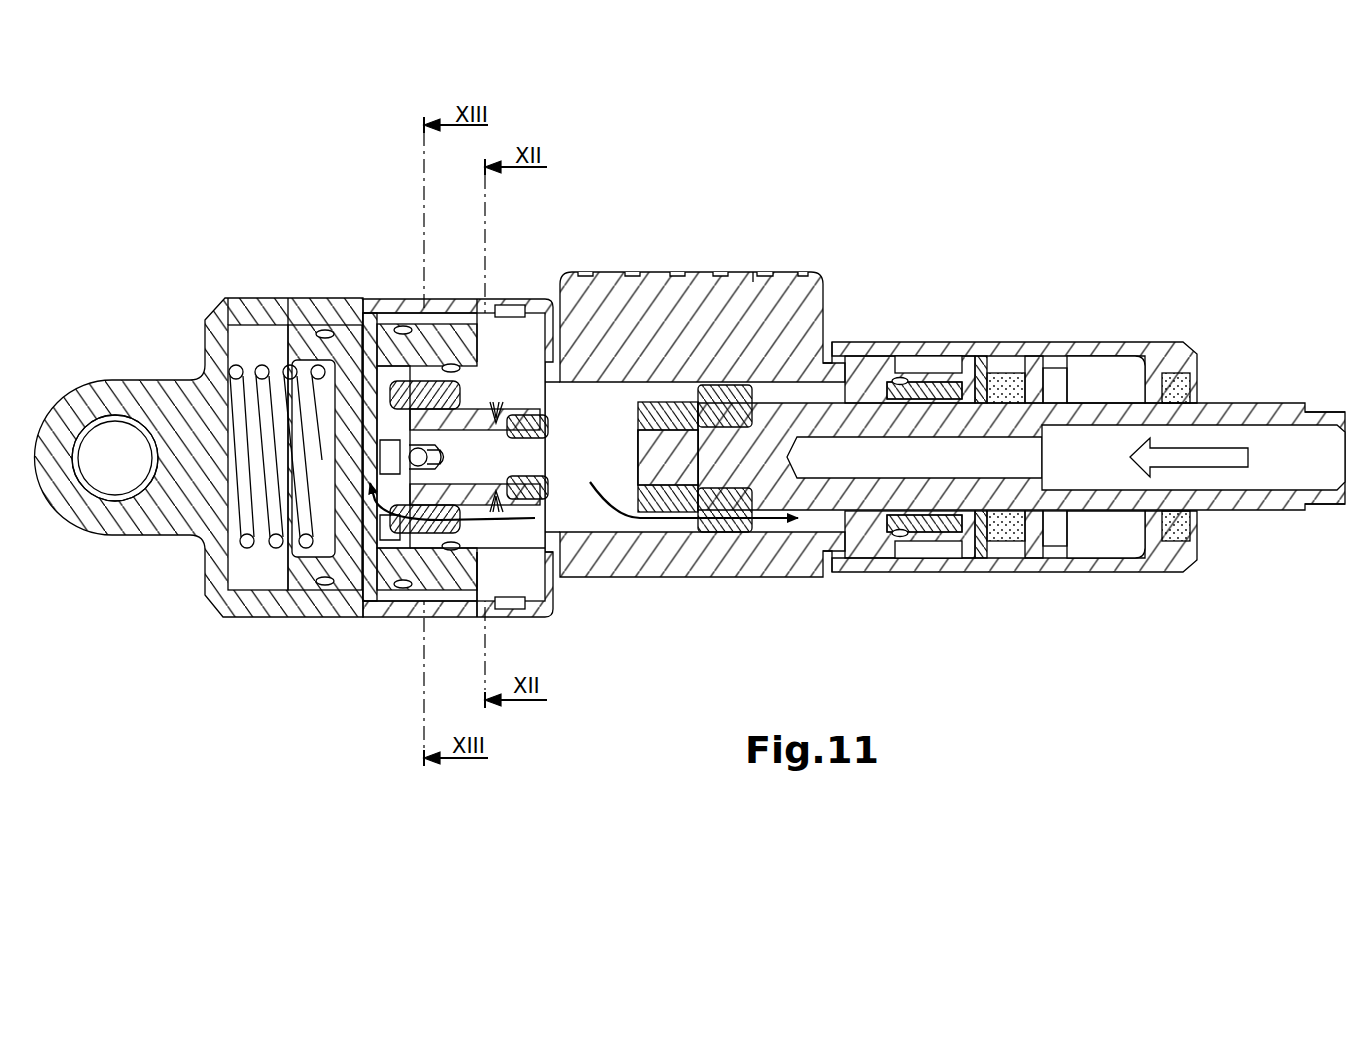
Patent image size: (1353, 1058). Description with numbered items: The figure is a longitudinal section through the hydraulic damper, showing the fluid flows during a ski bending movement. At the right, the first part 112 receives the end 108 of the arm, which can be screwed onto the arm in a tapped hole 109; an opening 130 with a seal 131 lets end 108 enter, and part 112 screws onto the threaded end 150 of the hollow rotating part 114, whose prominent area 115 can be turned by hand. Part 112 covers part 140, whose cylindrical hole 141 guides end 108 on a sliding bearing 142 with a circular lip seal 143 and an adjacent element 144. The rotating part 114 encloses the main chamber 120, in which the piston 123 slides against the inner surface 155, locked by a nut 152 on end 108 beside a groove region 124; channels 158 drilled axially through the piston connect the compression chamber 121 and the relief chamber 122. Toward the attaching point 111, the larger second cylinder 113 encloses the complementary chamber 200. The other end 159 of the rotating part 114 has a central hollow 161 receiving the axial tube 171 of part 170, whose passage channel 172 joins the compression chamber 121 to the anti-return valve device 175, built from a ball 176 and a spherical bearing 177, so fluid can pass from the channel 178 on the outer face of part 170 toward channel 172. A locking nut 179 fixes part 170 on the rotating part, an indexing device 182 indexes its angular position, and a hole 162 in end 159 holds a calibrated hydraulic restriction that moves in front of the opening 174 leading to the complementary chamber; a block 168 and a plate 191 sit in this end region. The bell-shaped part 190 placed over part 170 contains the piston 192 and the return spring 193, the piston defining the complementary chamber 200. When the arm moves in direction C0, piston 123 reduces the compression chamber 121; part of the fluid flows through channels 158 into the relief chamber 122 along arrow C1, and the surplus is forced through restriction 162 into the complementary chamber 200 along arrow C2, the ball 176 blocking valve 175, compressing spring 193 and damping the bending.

The end of arm 108 is at (1260, 412).
The tapped hole 109 is at (1262, 493).
The attaching point 111 is at (112, 450).
The first part 112 is at (1098, 355).
The second cylinder 113 is at (312, 330).
The rotating part 114 is at (607, 340).
The prominent area 115 is at (790, 305).
The main chamber 120 is at (665, 520).
The compression chamber 121 is at (645, 515).
The relief chamber 122 is at (807, 535).
The piston 123 is at (740, 527).
The seal groove 124 is at (730, 395).
The opening 130 is at (1215, 395).
The seal 131 is at (1175, 540).
The part covered by part 112 140 is at (1030, 380).
The cylindrical hole 141 is at (1050, 545).
The sliding bearing 142 is at (878, 550).
The circular lip seal 143 is at (980, 378).
The ring 144 is at (1055, 385).
The end of rotary part 150 is at (885, 363).
The nut 152 is at (668, 405).
The inner surface 155 is at (592, 372).
The channels 158 is at (735, 383).
The end of part 114 159 is at (495, 350).
The central hollow 161 is at (508, 590).
The hole with hydraulic restriction 162 is at (445, 590).
The valve block 168 is at (445, 345).
The part blanking main chamber 170 is at (435, 390).
The axial tube 171 is at (548, 560).
The passage channel 172 is at (575, 490).
The opening 174 is at (387, 543).
The anti-return valve device 175 is at (343, 463).
The ball 176 is at (345, 570).
The spherical bearing 177 is at (272, 465).
The channel 178 is at (385, 480).
The locking nut 179 is at (528, 420).
The indexing device 182 is at (395, 435).
The bell-shaped part 190 is at (288, 600).
The cap 191 is at (435, 590).
The piston 192 is at (272, 463).
The return spring 193 is at (380, 450).
The complementary chamber 200 is at (405, 450).
The arrow of arm movement C0 is at (1171, 457).
The arrow of flow through piston C1 is at (785, 525).
The arrow of flow to complementary chamber C2 is at (368, 500).